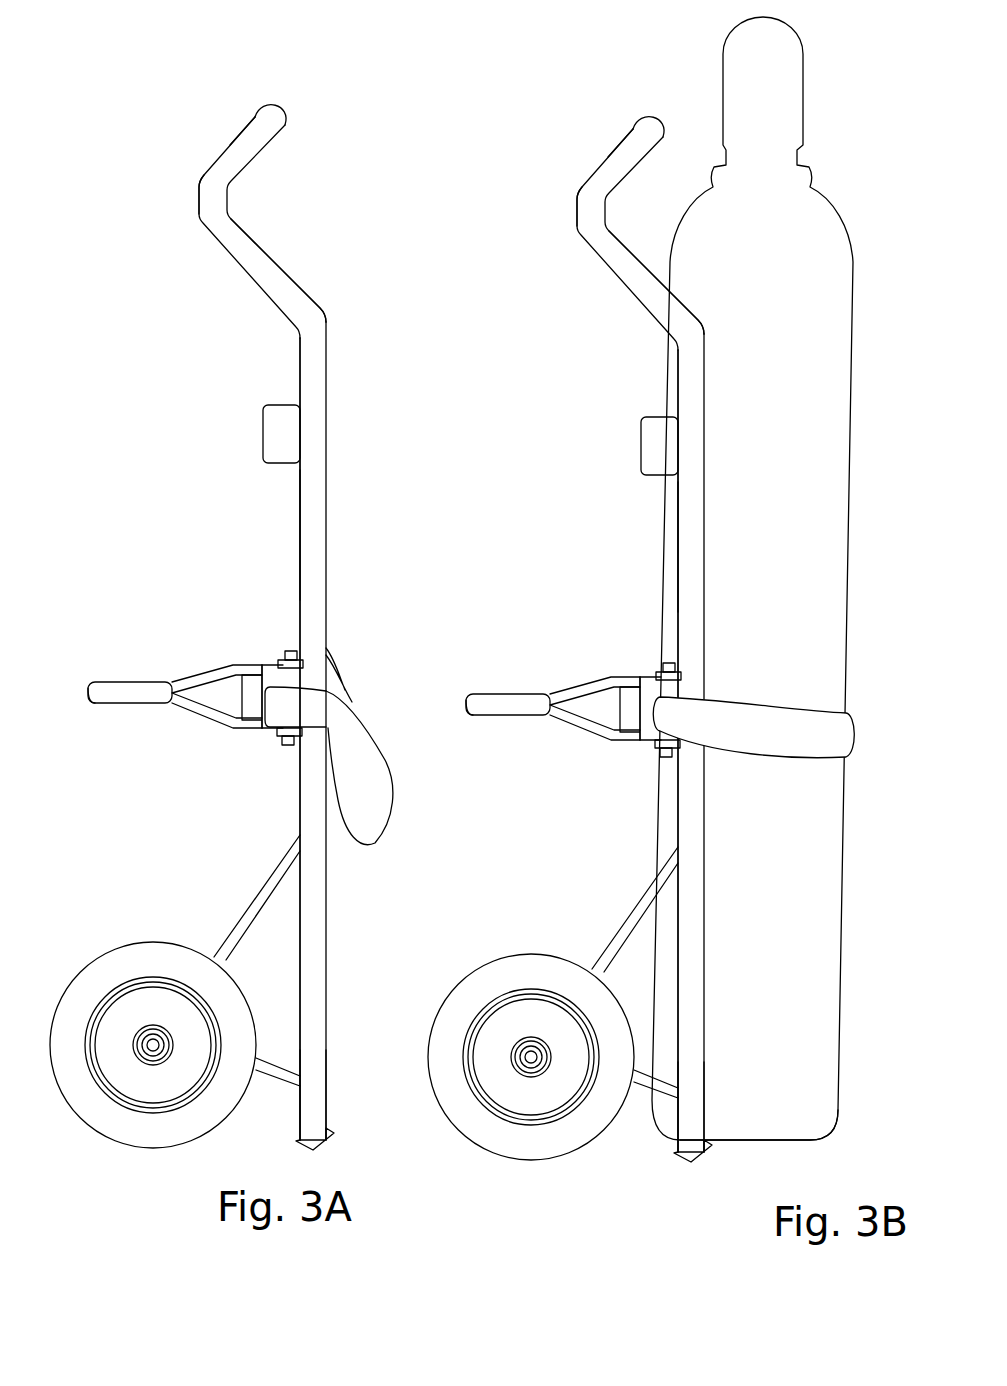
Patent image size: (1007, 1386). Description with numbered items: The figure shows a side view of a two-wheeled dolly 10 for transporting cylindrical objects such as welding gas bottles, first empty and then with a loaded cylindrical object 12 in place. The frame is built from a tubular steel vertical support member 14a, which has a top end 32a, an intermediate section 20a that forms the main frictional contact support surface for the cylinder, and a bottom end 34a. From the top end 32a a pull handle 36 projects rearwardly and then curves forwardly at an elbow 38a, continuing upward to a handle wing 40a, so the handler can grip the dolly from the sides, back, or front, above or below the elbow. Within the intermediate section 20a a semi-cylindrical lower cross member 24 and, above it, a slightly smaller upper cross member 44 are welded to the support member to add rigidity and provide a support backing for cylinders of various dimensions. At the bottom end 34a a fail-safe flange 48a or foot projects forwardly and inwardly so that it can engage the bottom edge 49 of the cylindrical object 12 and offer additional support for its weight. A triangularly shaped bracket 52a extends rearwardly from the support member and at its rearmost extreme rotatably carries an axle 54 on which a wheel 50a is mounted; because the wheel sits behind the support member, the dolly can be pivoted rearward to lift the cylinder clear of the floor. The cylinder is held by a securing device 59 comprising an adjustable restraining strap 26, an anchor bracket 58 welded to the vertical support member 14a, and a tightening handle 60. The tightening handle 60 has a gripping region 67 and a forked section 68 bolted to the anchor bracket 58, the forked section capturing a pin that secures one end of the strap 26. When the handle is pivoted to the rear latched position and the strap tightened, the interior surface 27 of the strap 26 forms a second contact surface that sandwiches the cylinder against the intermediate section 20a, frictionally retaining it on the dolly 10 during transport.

In FIG. 3A, the dolly 10 is at (160, 487).
In FIG. 3B, the dolly 10 is at (614, 718).
In FIG. 3B, the cylindrical object 12 is at (836, 215).
In FIG. 3A, the vertical support member 14a is at (305, 537).
In FIG. 3B, the vertical support member 14a is at (740, 476).
In FIG. 3A, the intermediate section 20a is at (327, 428).
In FIG. 3B, the intermediate section 20a is at (740, 743).
In FIG. 3A, the lower cross member 24 is at (256, 688).
In FIG. 3B, the lower cross member 24 is at (607, 666).
In FIG. 3A, the restraining strap 26 is at (390, 770).
In FIG. 3B, the restraining strap 26 is at (853, 732).
In FIG. 3A, the interior surface 27 is at (333, 675).
In FIG. 3A, the top end 32a is at (327, 310).
In FIG. 3B, the top end 32a is at (711, 282).
In FIG. 3A, the bottom end 34a is at (295, 1143).
In FIG. 3B, the bottom end 34a is at (626, 1126).
In FIG. 3A, the pull handle 36 is at (252, 120).
In FIG. 3B, the pull handle 36 is at (640, 198).
In FIG. 3A, the elbow 38a is at (197, 192).
In FIG. 3B, the elbow 38a is at (513, 196).
In FIG. 3A, the handle wing 40a is at (222, 152).
In FIG. 3B, the handle wing 40a is at (555, 130).
In FIG. 3A, the upper cross member 44 is at (263, 435).
In FIG. 3B, the upper cross member 44 is at (606, 443).
In FIG. 3A, the fail-safe flange 48a is at (327, 1130).
In FIG. 3B, the fail-safe flange 48a is at (708, 1165).
In FIG. 3B, the bottom edge 49 is at (783, 1148).
In FIG. 3A, the wheel 50a is at (93, 957).
In FIG. 3B, the wheel 50a is at (547, 1069).
In FIG. 3A, the bracket 52a is at (250, 905).
In FIG. 3B, the bracket 52a is at (602, 909).
In FIG. 3A, the axle 54 is at (155, 1040).
In FIG. 3B, the axle 54 is at (517, 985).
In FIG. 3A, the anchor bracket 58 is at (275, 735).
In FIG. 3B, the anchor bracket 58 is at (639, 708).
In FIG. 3A, the securing device 59 is at (262, 736).
In FIG. 3B, the securing device 59 is at (568, 733).
In FIG. 3A, the tightening handle 60 is at (88, 690).
In FIG. 3B, the tightening handle 60 is at (492, 668).
In FIG. 3A, the gripping region 67 is at (106, 705).
In FIG. 3B, the gripping region 67 is at (471, 727).
In FIG. 3A, the forked section 68 is at (205, 712).
In FIG. 3B, the forked section 68 is at (586, 719).